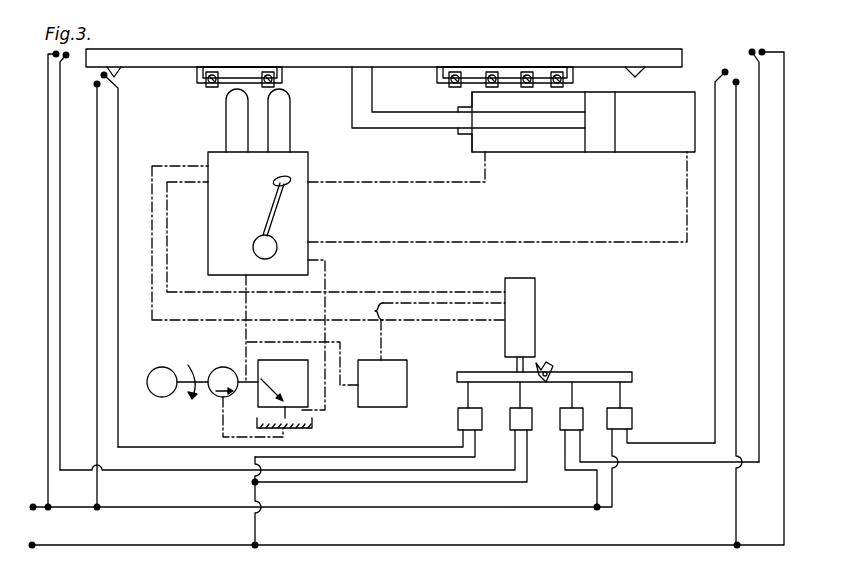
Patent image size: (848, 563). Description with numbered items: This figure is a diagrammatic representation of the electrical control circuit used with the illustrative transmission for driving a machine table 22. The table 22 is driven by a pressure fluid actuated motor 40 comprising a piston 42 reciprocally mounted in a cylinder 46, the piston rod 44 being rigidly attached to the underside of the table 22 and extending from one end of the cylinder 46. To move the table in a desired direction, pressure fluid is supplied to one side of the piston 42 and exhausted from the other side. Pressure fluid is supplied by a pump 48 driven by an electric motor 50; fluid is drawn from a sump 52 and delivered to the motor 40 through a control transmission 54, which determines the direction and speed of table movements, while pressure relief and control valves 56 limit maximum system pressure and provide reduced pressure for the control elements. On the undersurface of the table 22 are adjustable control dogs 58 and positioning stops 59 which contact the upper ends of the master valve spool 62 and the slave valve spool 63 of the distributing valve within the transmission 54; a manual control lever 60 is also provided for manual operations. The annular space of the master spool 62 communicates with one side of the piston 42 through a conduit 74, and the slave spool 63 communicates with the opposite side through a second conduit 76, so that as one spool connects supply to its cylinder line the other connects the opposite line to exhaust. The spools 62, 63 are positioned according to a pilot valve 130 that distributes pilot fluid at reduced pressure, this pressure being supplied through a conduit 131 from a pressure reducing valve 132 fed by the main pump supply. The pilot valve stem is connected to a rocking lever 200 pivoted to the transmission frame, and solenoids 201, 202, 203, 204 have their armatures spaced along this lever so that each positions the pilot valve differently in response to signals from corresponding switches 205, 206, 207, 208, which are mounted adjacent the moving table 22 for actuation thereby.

The machine table 22 is at (666, 60).
The control dogs 58 is at (118, 68).
The positioning stops 59 is at (249, 67).
The piston rod 44 is at (398, 120).
The pressure fluid actuated motor 40 is at (552, 156).
The piston 42 is at (603, 145).
The cylinder 46 is at (650, 145).
The control transmission 54 is at (300, 232).
The master valve spool 62 is at (228, 134).
The slave valve spool 63 is at (283, 140).
The manual control lever 60 is at (270, 217).
The conduit 74 is at (430, 184).
The second conduit 76 is at (615, 243).
The pilot valve supply conduit 131 is at (462, 297).
The pilot valve 130 is at (528, 327).
The pressure reducing valve 132 is at (403, 387).
The rocking lever 200 is at (565, 378).
The solenoid 201 is at (462, 423).
The solenoid 202 is at (513, 422).
The solenoid 203 is at (563, 420).
The solenoid 204 is at (632, 417).
The electric motor 50 is at (162, 367).
The pump 48 is at (225, 367).
The pressure relief and control valves 56 is at (293, 372).
The sump 52 is at (318, 420).
The switch 205 is at (118, 79).
The switch 206 is at (403, 291).
The switch 207 is at (756, 50).
The switch 208 is at (724, 72).